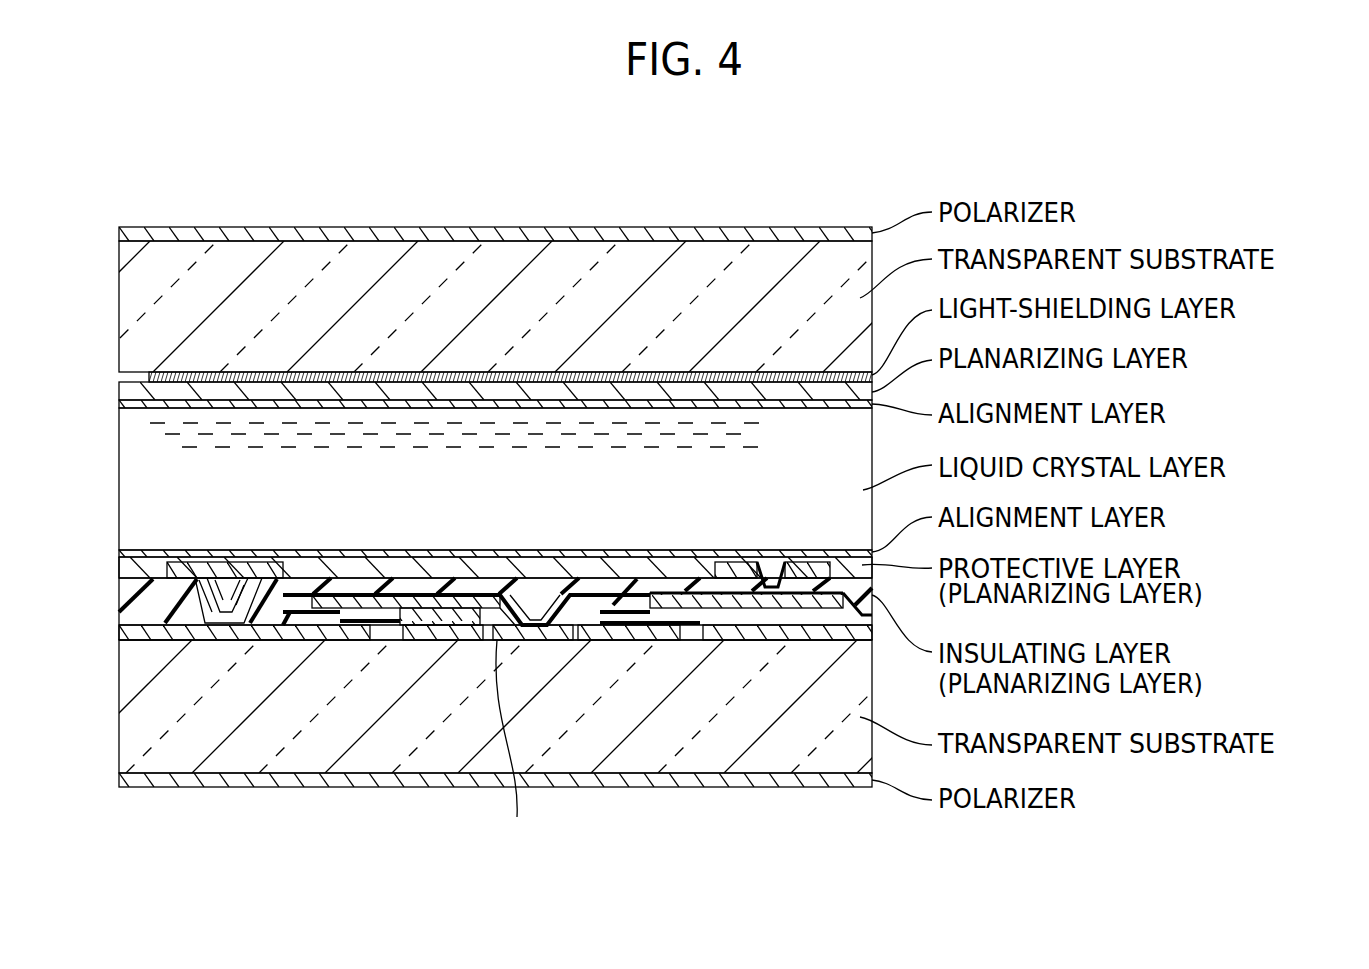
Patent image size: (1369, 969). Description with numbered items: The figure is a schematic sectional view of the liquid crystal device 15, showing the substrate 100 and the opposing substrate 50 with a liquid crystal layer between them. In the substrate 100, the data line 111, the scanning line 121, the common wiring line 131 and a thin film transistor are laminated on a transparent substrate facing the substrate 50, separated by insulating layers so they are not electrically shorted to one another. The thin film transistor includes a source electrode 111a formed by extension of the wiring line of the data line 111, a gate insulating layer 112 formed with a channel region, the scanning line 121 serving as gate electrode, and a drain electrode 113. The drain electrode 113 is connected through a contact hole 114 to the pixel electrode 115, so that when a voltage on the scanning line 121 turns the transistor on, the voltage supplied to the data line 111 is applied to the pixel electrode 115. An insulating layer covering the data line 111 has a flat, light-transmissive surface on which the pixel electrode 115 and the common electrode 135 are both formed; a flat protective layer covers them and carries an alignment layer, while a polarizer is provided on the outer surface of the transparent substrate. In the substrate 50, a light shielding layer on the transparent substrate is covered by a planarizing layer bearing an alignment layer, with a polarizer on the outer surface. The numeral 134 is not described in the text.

The liquid crystal device 15 is at (322, 192).
The substrate 50 is at (1297, 197).
The substrate 100 is at (711, 679).
The data line 111 is at (443, 592).
The source electrode 111a is at (572, 592).
The gate insulating layer 112 is at (695, 640).
The drain electrode 113 is at (682, 580).
The contact hole 114 is at (775, 570).
The pixel electrode 115 is at (752, 567).
The scanning line 121 is at (432, 640).
The common wiring line 131 is at (208, 640).
The contact hole 134 is at (226, 575).
The common electrode 135 is at (272, 570).